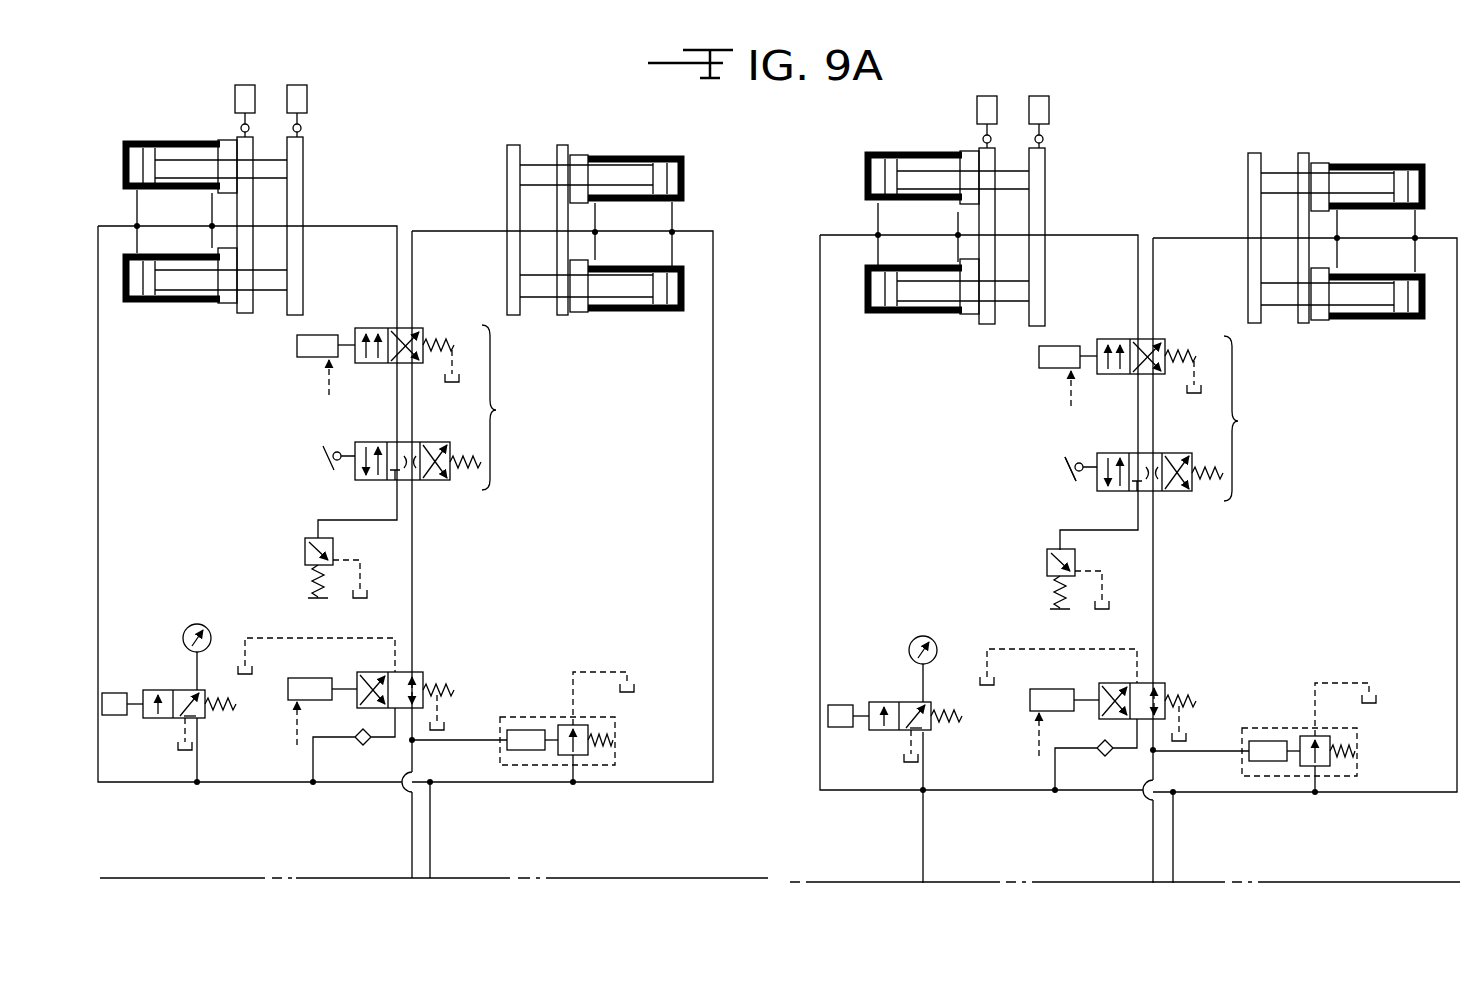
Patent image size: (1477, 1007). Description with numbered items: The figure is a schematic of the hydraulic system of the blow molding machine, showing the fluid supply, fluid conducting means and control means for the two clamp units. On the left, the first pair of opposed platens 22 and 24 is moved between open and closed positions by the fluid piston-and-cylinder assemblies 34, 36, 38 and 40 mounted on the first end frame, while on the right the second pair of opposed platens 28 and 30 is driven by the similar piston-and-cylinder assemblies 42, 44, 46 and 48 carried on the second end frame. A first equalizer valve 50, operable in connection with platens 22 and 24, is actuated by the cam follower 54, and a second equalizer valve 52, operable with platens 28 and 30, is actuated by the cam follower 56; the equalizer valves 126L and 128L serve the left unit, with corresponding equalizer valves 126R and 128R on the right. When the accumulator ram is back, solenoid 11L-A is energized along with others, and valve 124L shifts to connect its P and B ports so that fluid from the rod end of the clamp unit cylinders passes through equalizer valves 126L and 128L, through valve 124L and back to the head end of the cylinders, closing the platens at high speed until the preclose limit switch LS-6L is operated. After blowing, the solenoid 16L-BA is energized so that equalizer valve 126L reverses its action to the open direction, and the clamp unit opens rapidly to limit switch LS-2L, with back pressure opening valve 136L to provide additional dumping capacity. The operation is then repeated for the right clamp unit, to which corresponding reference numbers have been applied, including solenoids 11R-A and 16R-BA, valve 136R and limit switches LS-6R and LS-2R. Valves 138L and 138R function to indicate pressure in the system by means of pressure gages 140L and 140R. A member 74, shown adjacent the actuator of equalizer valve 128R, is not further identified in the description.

The platen 22 is at (305, 152).
The platen 24 is at (507, 160).
The platen 28 is at (1062, 237).
The platen 30 is at (1233, 238).
The fluid piston-and-cylinder assembly 34 is at (948, 197).
The fluid piston-and-cylinder assembly 36 is at (140, 304).
The fluid piston-and-cylinder assembly 38 is at (140, 191).
The fluid piston-and-cylinder assembly 40 is at (948, 311).
The piston-and-cylinder assembly 42 is at (598, 202).
The piston-and-cylinder assembly 44 is at (1341, 311).
The piston-and-cylinder assembly 46 is at (1341, 203).
The piston-and-cylinder assembly 48 is at (620, 312).
The first equalizer valve 50 is at (499, 408).
The second equalizer valve 52 is at (1256, 418).
The cam follower 54 is at (326, 447).
The cam follower 56 is at (1084, 454).
The manual control lever 74 is at (1040, 459).
The solenoid 16L-BA is at (312, 335).
The solenoid 16R-BA is at (1078, 355).
The equalizer valve 126L is at (421, 327).
The equalizer valve 126R is at (1163, 346).
The equalizer valve 128L is at (434, 440).
The equalizer valve 128R is at (1160, 449).
The valve 124L is at (438, 660).
The valve 136L is at (524, 699).
The valve 136R is at (1265, 718).
The valve 138L is at (157, 687).
The valve 138R is at (895, 698).
The pressure gage 140L is at (203, 625).
The pressure gage 140R is at (936, 628).
The solenoid 11L-A is at (302, 678).
The solenoid 11R-A is at (1067, 708).
The limit switch LS-2L is at (243, 85).
The preclose limit switch LS-6L is at (297, 85).
The preclose limit switch LS-6R is at (963, 102).
The limit switch LS-2R is at (1062, 103).